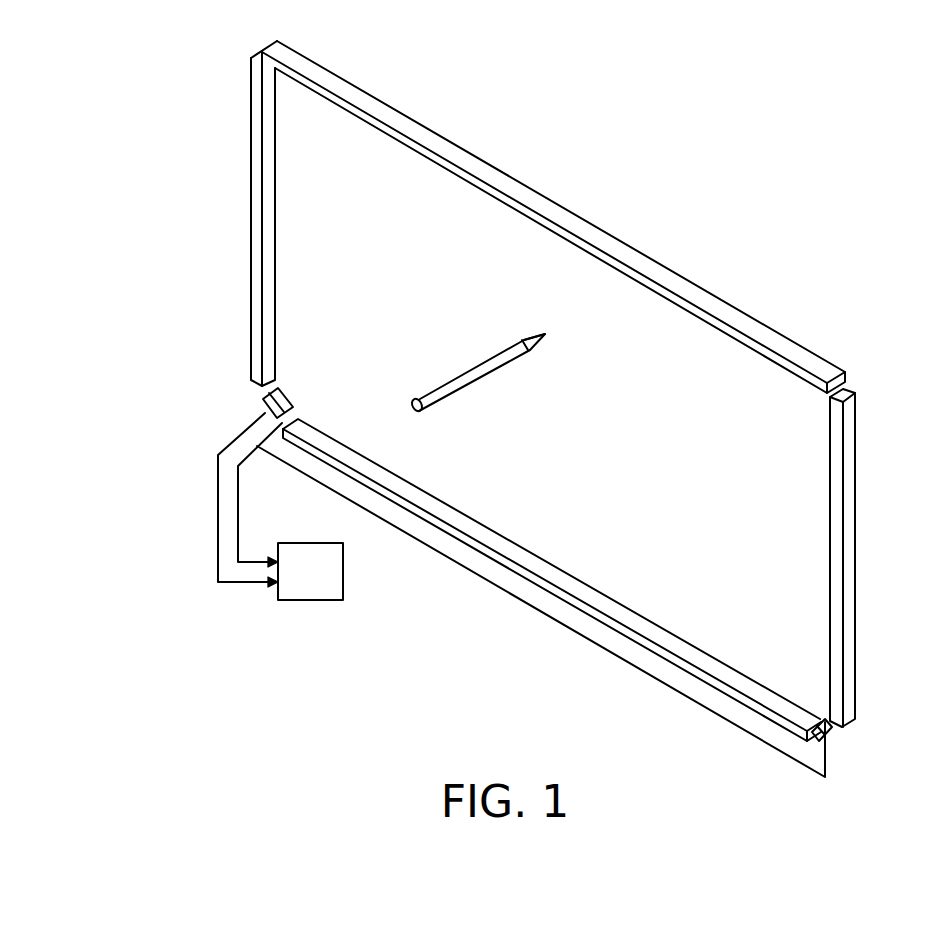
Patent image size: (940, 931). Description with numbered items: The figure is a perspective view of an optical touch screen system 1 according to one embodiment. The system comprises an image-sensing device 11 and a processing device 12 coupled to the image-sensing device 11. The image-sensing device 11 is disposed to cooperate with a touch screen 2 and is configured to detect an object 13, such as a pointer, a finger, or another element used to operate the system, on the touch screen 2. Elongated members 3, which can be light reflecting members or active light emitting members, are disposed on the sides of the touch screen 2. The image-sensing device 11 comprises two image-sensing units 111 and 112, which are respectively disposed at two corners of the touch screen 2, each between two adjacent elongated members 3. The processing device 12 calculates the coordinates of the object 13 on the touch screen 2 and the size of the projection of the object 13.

The optical touch screen system 1 is at (230, 184).
The touch screen 2 is at (800, 530).
The elongated member 3 is at (530, 198).
The image-sensing device 11 is at (239, 410).
The image-sensing unit 111 is at (260, 401).
The image-sensing unit 112 is at (833, 737).
The processing device 12 is at (299, 590).
The object 13 is at (475, 385).